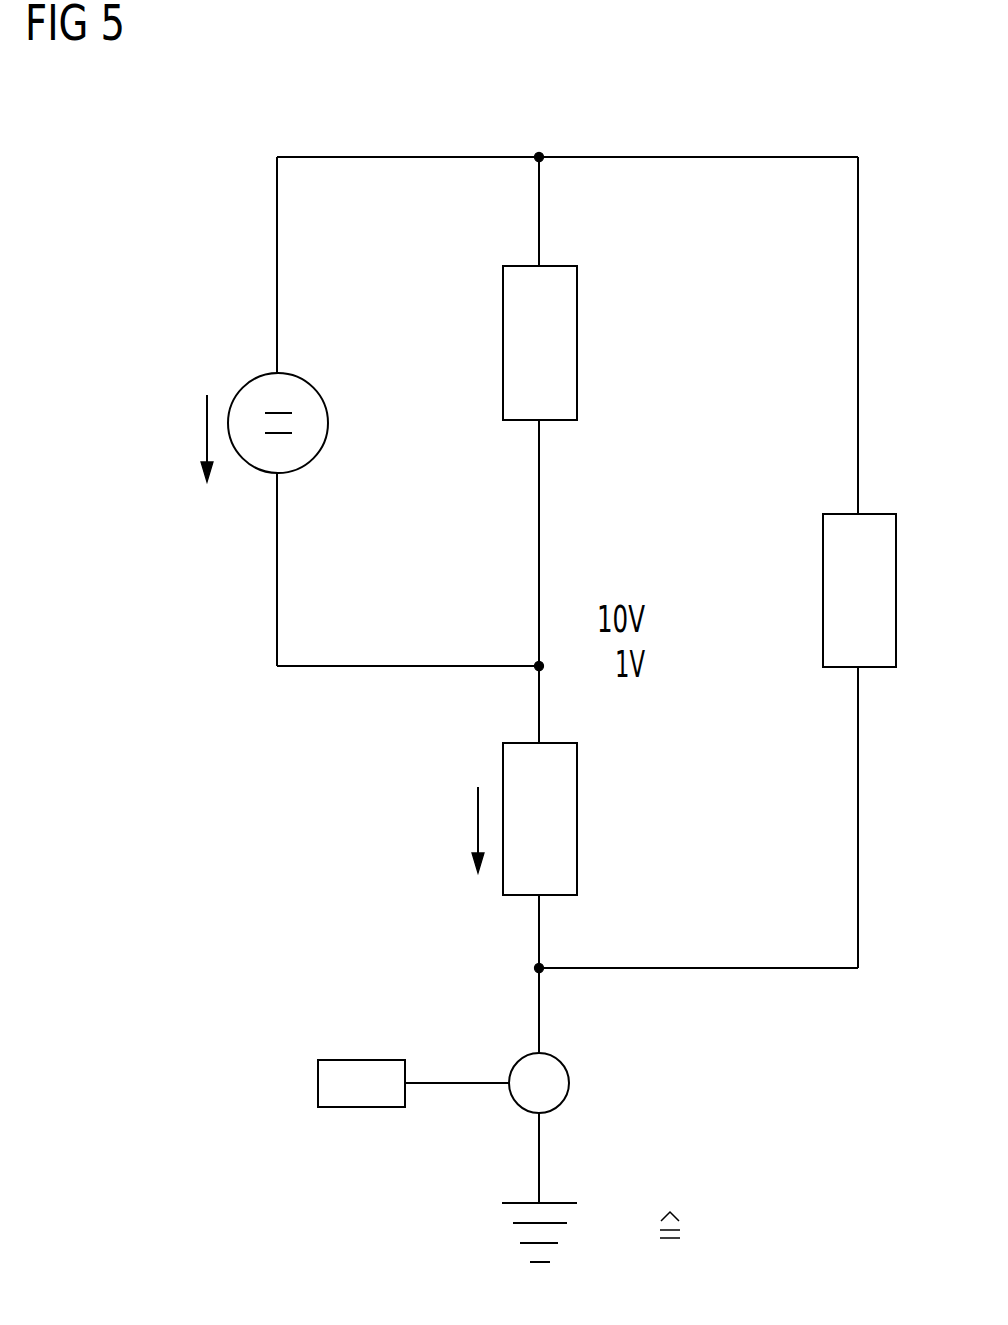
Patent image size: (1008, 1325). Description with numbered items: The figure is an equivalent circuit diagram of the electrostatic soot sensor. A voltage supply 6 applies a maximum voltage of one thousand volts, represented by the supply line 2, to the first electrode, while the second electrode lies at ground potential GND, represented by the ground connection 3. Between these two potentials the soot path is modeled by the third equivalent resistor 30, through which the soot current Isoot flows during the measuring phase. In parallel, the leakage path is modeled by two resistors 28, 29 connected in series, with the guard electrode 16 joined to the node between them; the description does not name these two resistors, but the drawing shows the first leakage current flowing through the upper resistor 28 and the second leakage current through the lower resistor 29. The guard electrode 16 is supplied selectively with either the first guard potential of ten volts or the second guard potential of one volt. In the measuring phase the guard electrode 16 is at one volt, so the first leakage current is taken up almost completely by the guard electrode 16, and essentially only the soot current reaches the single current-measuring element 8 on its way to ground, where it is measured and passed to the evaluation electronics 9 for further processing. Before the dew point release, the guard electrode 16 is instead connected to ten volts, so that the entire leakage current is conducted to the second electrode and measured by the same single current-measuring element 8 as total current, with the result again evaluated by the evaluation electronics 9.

The high-voltage supply line (1000 V) 2 is at (320, 157).
The ground line 3 is at (738, 968).
The voltage supply 6 is at (313, 385).
The single current-measuring element 8 is at (515, 1063).
The evaluation electronics 9 is at (358, 1060).
The guard electrode 16 is at (539, 666).
The first leakage resistance R_Leak1 28 is at (578, 283).
The second leakage resistance R_Leak2 29 is at (578, 758).
The third equivalent resistor 30 is at (823, 530).